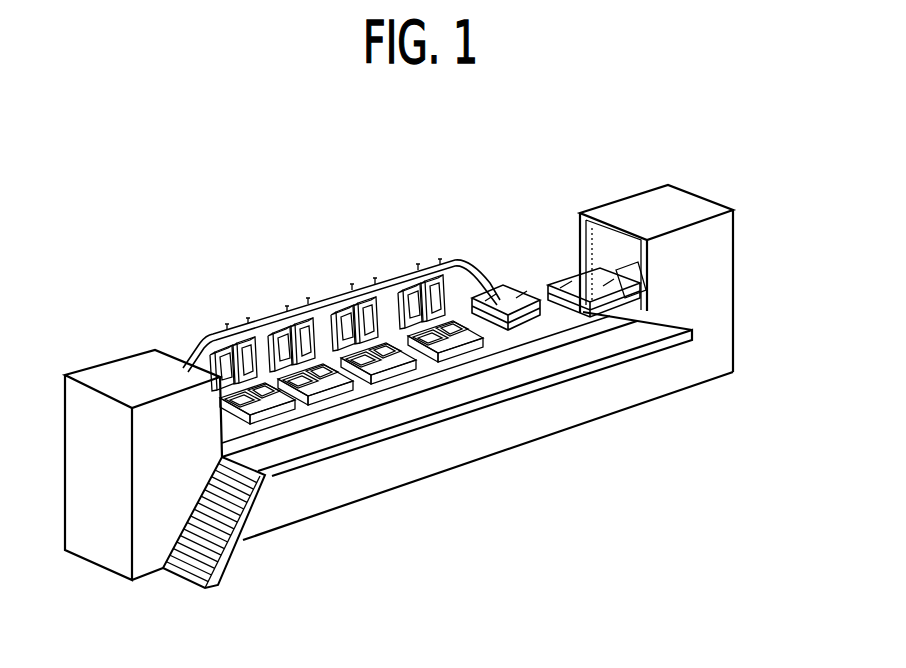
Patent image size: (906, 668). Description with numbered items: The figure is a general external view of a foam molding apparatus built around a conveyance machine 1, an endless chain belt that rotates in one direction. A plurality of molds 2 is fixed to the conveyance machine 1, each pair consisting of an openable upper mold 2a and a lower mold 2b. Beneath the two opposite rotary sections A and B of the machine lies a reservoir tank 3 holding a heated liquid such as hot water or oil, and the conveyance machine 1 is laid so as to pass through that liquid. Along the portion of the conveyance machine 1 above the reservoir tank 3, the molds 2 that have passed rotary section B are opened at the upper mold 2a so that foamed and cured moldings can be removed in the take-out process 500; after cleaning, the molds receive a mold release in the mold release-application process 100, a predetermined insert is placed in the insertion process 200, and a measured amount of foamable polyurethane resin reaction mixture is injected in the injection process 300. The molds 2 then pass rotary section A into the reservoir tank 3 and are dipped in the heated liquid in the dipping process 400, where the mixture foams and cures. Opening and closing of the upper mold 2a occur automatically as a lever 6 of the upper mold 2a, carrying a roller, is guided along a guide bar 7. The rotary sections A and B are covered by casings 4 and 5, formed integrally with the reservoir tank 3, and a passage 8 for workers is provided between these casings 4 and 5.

The conveyance machine 1 is at (593, 322).
The molds 2 is at (517, 290).
The upper mold 2a is at (200, 340).
The lower mold 2b is at (258, 418).
The reservoir tank 3 is at (595, 397).
The casing 4 is at (725, 280).
The casing 5 is at (88, 545).
The lever 6 is at (227, 330).
The guide bar 7 is at (250, 338).
The passage 8 is at (415, 445).
The mold release-application process 100 is at (296, 308).
The insertion process 200 is at (380, 248).
The injection process 300 is at (447, 233).
The dipping process 400 is at (460, 468).
The take-out process 500 is at (276, 347).
The rotary section A is at (720, 255).
The rotary section B is at (140, 375).